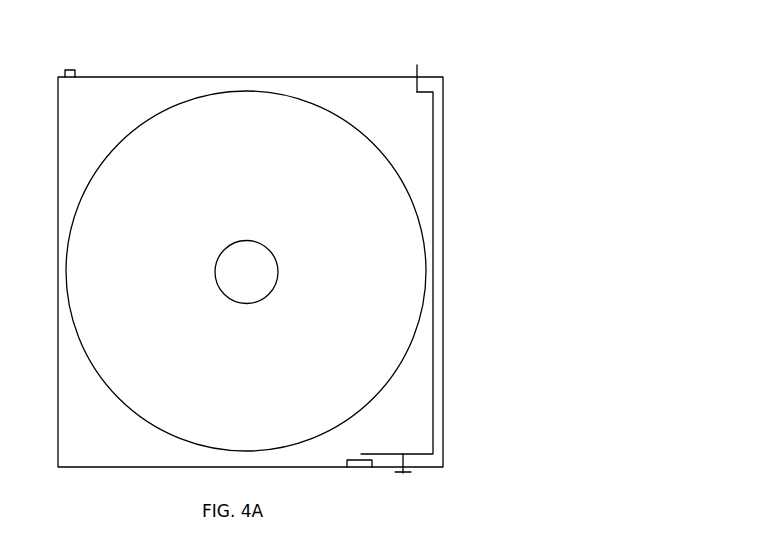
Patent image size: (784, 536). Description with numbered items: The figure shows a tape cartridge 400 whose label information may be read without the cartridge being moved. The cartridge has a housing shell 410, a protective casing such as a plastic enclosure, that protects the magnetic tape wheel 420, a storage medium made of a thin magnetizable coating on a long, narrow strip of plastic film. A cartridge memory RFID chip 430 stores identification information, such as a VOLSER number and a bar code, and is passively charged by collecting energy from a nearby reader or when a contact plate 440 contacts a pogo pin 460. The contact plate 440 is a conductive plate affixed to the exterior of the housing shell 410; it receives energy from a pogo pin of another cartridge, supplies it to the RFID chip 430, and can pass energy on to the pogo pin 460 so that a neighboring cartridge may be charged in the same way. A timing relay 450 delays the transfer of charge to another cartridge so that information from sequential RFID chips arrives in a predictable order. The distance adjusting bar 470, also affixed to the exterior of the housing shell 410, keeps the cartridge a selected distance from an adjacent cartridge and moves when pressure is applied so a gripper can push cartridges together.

The tape cartridge 400 is at (628, 87).
The housing shell 410 is at (58, 280).
The magnetic tape wheel 420 is at (128, 137).
The cartridge memory RFID chip 430 is at (366, 460).
The contact plate 440 is at (403, 474).
The timing relay 450 is at (438, 280).
The pogo pin 460 is at (420, 74).
The distance adjusting bar 470 is at (63, 72).